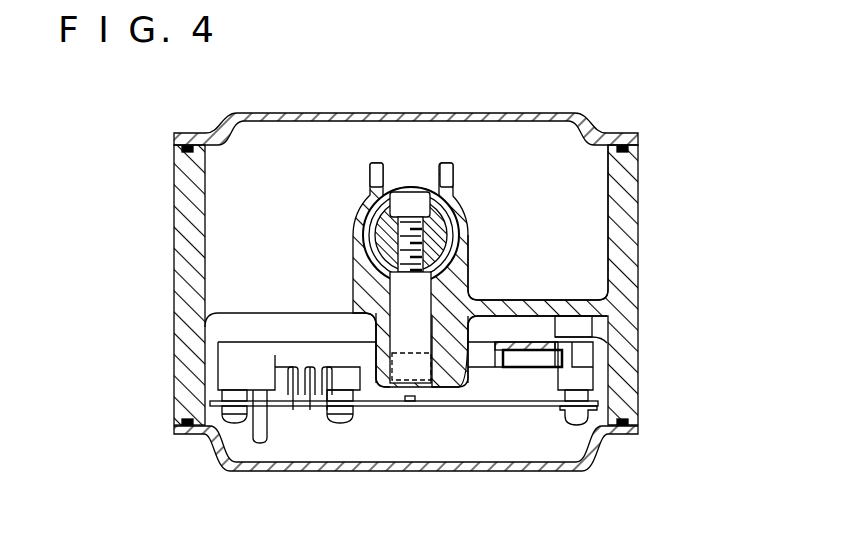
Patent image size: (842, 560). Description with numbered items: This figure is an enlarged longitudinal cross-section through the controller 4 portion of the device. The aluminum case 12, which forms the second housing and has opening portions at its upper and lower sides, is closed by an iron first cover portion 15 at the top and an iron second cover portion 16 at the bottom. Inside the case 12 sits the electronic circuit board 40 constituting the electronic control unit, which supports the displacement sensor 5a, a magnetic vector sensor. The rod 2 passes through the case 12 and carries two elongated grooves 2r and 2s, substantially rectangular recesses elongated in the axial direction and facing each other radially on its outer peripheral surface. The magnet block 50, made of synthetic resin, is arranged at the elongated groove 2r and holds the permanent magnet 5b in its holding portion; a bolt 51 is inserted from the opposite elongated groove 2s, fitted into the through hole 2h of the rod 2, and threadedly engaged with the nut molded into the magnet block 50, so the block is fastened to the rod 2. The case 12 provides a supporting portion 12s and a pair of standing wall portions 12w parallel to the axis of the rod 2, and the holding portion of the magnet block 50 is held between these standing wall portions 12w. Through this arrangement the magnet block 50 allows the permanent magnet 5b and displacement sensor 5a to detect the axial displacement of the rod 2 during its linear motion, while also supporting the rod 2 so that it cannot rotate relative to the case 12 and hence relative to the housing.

The rod 2 is at (390, 176).
The through hole 2h is at (370, 186).
The elongated groove 2r is at (450, 188).
The elongated groove 2s is at (423, 188).
The controller 4 is at (410, 297).
The displacement sensor 5a is at (413, 402).
The permanent magnet 5b is at (448, 429).
The case 12 is at (439, 333).
The supporting portion 12s is at (533, 300).
The standing wall portion 12w is at (378, 348).
The first cover portion 15 is at (571, 112).
The second cover portion 16 is at (567, 472).
The electronic circuit board 40 is at (363, 404).
The magnet block 50 is at (310, 383).
The bolt 51 is at (410, 190).